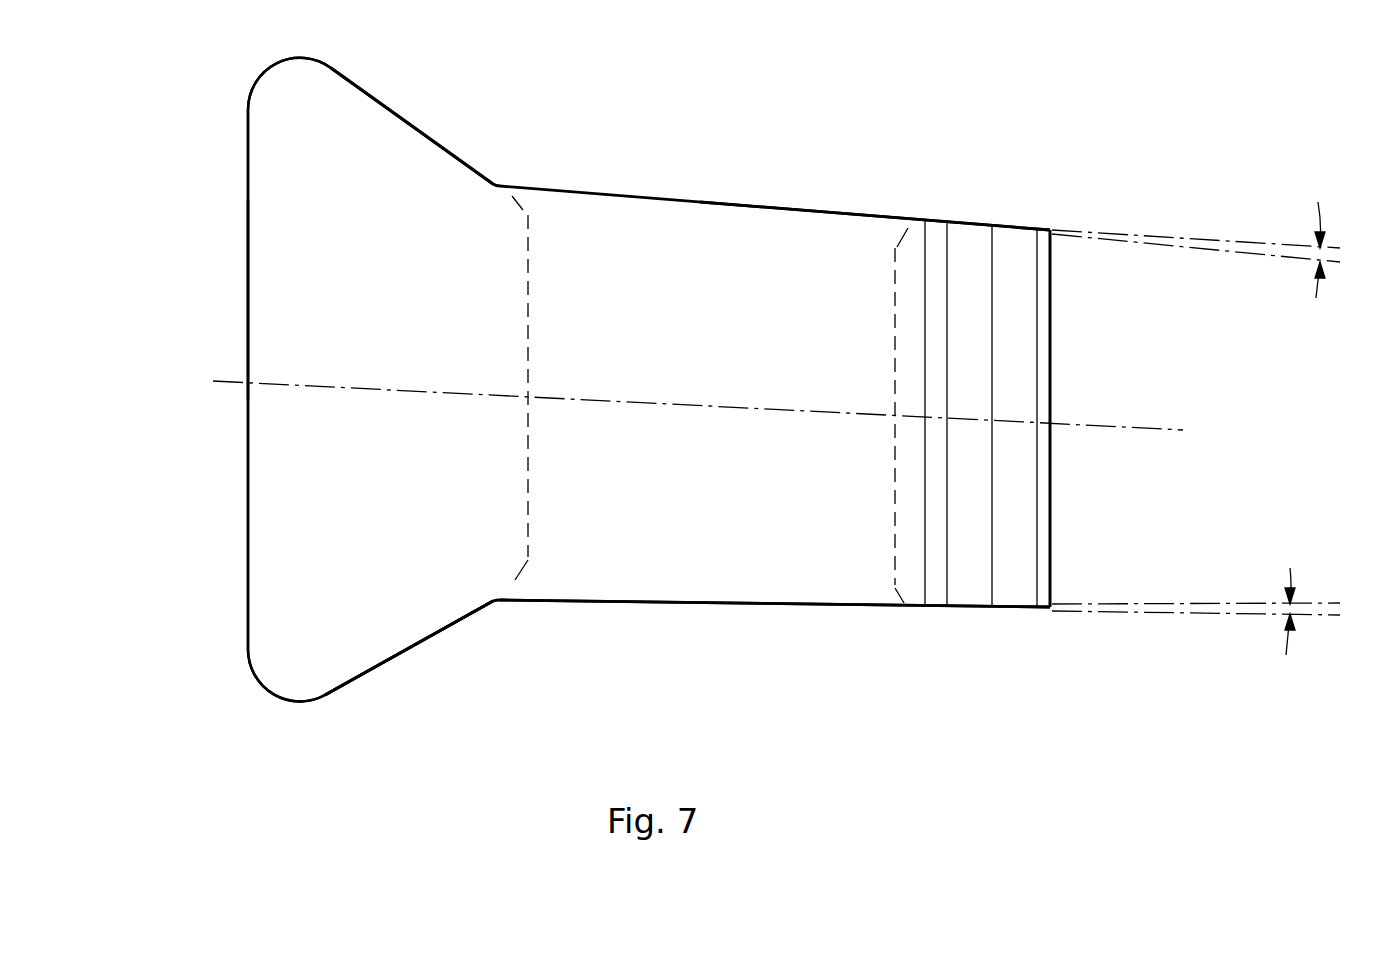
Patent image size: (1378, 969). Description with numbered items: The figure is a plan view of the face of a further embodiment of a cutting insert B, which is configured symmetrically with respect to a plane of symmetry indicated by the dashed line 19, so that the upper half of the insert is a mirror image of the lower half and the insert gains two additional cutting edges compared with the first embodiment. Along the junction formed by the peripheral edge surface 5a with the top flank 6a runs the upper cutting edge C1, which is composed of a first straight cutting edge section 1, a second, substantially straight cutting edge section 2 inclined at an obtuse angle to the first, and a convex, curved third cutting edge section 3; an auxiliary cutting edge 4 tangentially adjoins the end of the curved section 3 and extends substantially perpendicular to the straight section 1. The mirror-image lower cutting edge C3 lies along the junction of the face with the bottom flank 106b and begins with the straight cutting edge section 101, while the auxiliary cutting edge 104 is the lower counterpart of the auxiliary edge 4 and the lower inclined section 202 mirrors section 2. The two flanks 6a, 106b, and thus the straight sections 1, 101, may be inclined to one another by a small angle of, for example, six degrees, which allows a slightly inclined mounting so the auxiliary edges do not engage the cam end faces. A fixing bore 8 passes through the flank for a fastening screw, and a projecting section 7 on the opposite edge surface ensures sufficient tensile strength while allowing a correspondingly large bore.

The first straight cutting edge section 1 is at (723, 203).
The second straight cutting edge section 2 is at (433, 143).
The third cutting edge section 3 is at (265, 76).
The auxiliary cutting edge 4 is at (248, 176).
The peripheral edge surface 5a is at (262, 312).
The top flank 6a is at (838, 215).
The projecting section 7 is at (1018, 238).
The fixing bore 8 is at (528, 517).
The plane of symmetry 19 is at (262, 388).
The straight cutting edge section 101 is at (730, 605).
The auxiliary cutting edge 104 is at (248, 575).
The bottom flank 106b is at (877, 607).
The lower tapered surface 202 is at (360, 680).
The cutting insert B is at (678, 140).
The cutting edge C1 is at (612, 190).
The cutting edge C3 is at (643, 620).